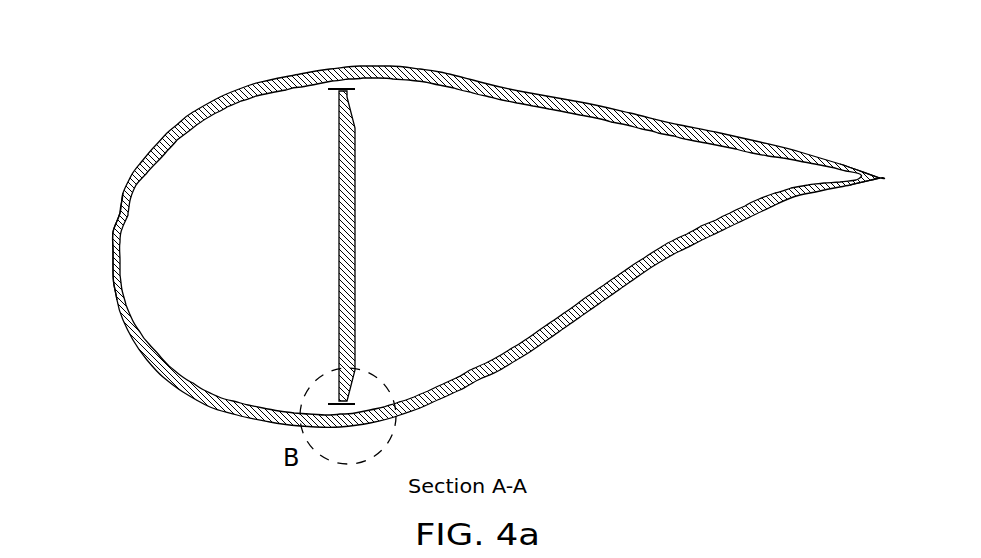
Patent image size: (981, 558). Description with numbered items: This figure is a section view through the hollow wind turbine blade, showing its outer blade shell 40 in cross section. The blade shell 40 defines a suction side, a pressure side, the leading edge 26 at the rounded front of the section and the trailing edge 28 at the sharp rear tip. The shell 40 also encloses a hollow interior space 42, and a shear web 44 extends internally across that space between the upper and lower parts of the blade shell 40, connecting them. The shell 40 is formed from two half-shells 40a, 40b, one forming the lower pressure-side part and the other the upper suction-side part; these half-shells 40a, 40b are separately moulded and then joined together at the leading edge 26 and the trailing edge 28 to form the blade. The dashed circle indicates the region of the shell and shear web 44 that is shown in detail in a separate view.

The leading edge 26 is at (113, 250).
The trailing edge 28 is at (881, 179).
The outer blade shell 40 is at (589, 103).
The half-shell 40a is at (212, 404).
The half-shell 40b is at (275, 84).
The hollow interior space 42 is at (257, 262).
The shear web 44 is at (357, 251).